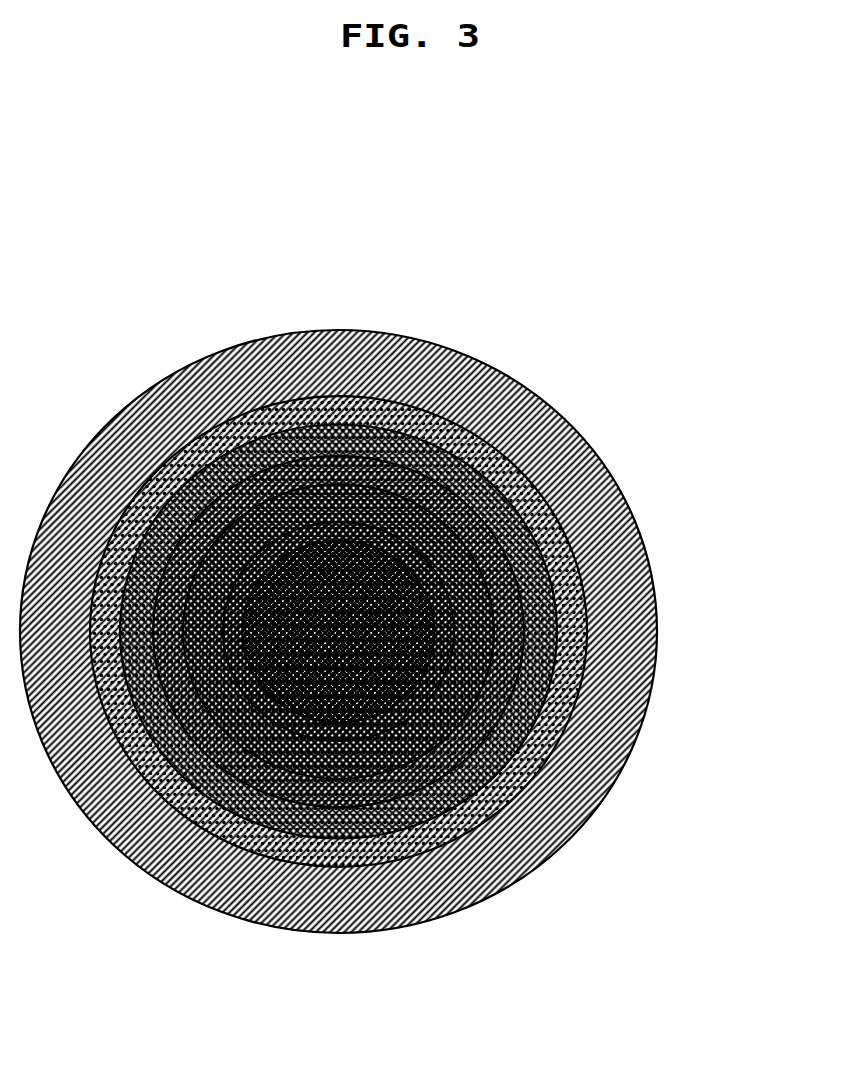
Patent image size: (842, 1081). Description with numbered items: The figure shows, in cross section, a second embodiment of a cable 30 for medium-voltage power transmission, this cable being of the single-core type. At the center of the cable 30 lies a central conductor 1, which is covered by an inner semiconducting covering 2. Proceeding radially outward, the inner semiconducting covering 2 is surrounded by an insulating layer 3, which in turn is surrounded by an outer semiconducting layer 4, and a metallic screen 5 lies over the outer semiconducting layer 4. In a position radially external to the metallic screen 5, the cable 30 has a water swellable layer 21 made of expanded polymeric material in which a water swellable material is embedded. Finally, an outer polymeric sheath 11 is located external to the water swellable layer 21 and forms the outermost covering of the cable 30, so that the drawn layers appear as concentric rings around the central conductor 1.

The cable 30 is at (141, 308).
The outer polymeric sheath 11 is at (525, 400).
The water swellable layer 21 is at (551, 540).
The metallic screen 5 is at (537, 599).
The outer semiconducting layer 4 is at (503, 672).
The insulating layer 3 is at (458, 691).
The inner semiconducting covering 2 is at (414, 701).
The central conductor 1 is at (360, 728).